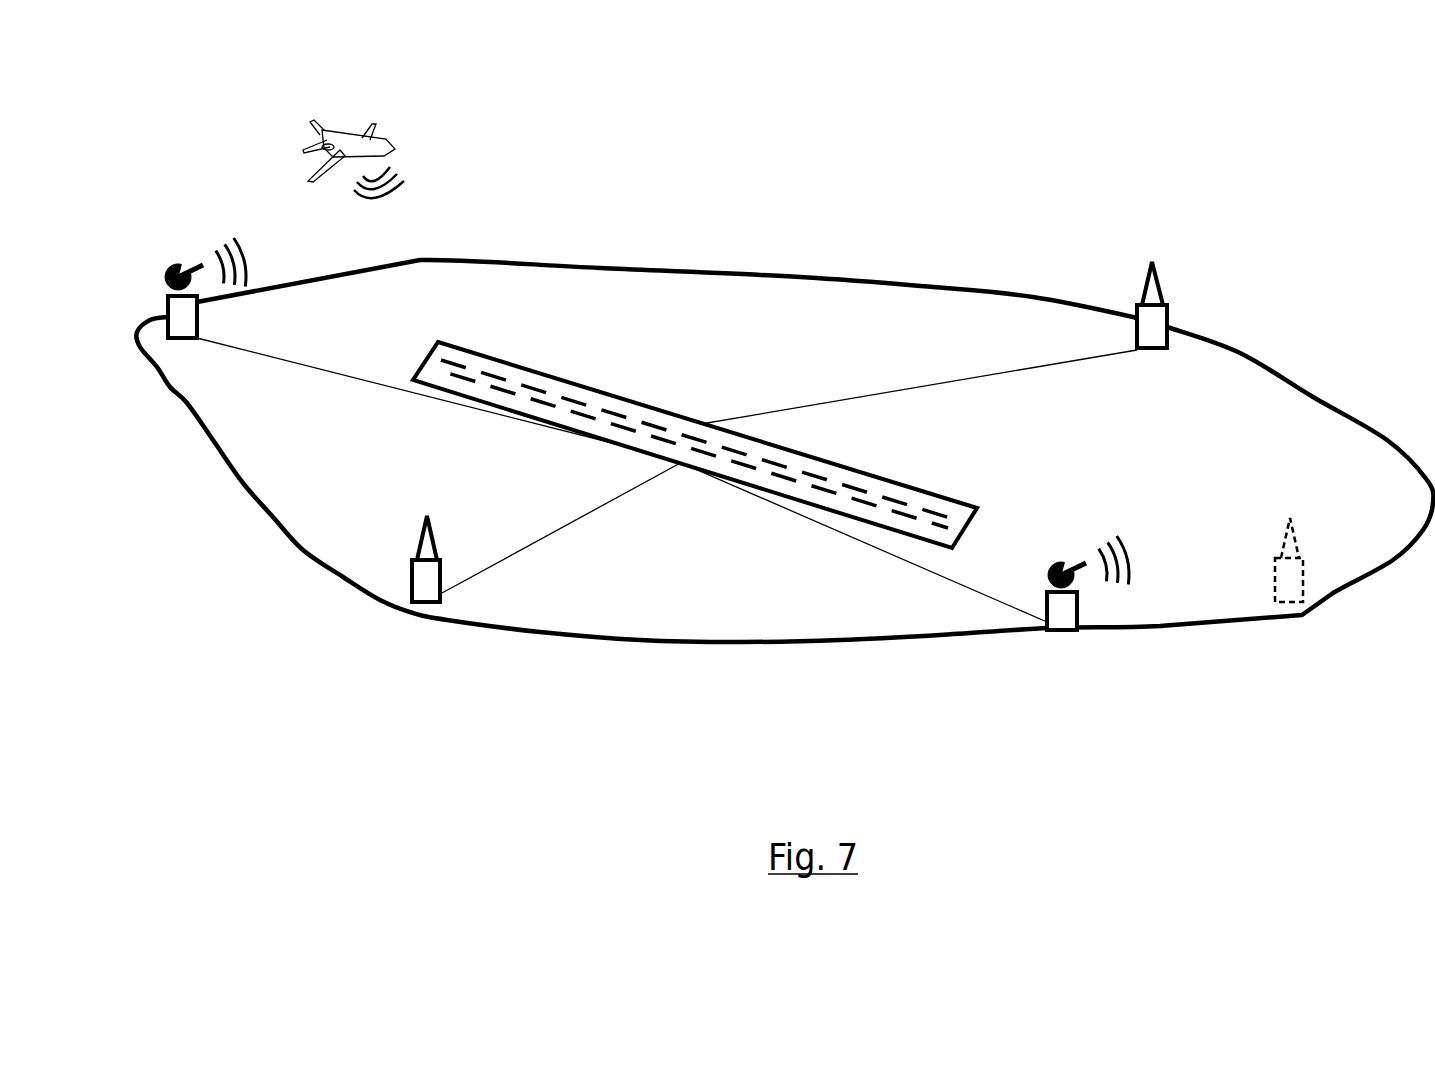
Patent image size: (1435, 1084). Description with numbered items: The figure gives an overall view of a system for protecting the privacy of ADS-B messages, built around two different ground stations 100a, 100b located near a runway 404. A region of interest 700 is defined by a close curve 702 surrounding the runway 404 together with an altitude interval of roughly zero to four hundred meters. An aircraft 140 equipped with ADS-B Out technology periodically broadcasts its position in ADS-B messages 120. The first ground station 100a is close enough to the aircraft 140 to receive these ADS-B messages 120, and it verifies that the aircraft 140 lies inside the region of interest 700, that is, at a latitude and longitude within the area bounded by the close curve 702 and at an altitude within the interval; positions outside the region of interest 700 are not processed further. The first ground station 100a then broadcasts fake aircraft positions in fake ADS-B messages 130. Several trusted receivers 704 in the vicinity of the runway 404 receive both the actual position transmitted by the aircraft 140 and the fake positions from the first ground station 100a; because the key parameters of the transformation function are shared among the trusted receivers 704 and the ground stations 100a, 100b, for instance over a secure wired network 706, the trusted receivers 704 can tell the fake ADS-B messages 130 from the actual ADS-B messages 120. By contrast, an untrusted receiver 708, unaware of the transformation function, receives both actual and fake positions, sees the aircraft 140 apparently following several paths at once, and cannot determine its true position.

The first ground station 100a is at (177, 323).
The second ground station 100b is at (1063, 608).
The ADS-B messages 120 is at (392, 188).
The fake ADS-B messages 130 is at (243, 270).
The aircraft 140 is at (318, 150).
The runway 404 is at (908, 500).
The region of interest 700 is at (766, 486).
The close curve 702 is at (670, 642).
The trusted receivers 704 is at (1155, 322).
The secure wired network 706 is at (540, 530).
The untrusted receivers 708 is at (1290, 573).